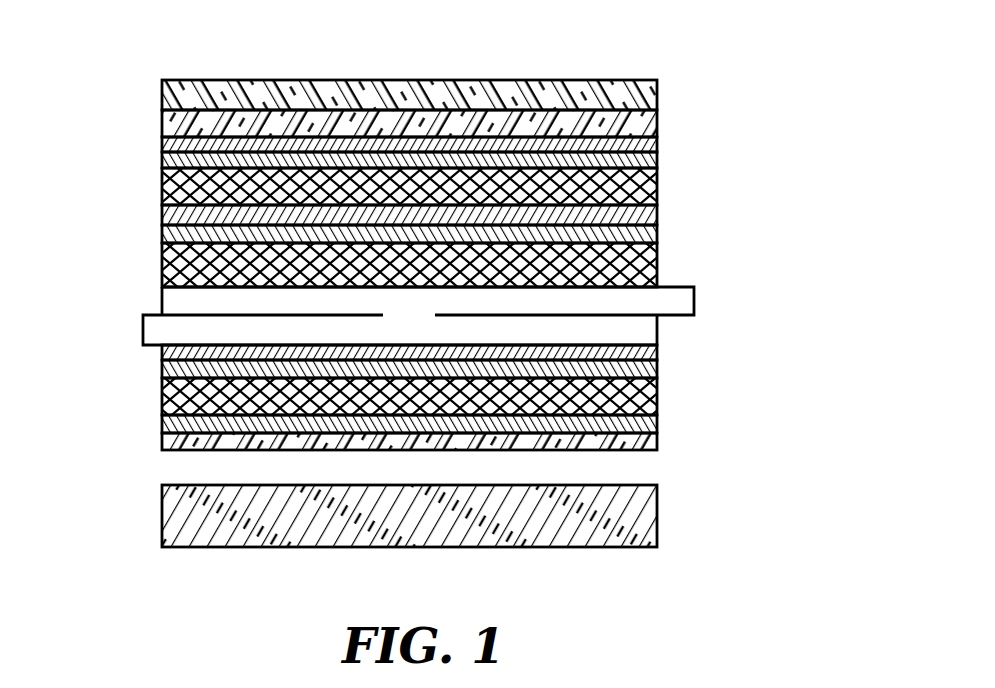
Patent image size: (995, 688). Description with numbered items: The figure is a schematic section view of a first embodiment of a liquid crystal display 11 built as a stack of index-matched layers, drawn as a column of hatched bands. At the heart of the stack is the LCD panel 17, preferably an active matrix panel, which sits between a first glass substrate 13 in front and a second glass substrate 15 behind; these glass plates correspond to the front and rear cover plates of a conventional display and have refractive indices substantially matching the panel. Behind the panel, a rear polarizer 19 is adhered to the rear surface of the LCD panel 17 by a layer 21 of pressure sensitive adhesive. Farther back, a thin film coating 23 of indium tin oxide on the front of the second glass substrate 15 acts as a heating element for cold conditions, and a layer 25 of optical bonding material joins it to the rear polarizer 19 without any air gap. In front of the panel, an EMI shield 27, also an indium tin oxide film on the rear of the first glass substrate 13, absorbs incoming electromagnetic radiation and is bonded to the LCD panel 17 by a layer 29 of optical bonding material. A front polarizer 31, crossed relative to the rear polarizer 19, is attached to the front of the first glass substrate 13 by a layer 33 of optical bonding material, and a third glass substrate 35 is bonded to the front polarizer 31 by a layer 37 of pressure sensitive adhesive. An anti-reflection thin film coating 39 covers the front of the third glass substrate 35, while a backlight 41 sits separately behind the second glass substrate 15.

The liquid crystal display 11 is at (573, 54).
The first glass substrate 13 is at (162, 218).
The second glass substrate 15 is at (658, 441).
The LCD panel 17 is at (423, 335).
The rear polarizer 19 is at (162, 370).
The layer of pressure sensitive adhesive 21 is at (658, 351).
The thin film coating 23 is at (162, 425).
The layer of optical bonding material 25 is at (658, 393).
The EMI shield 27 is at (658, 231).
The layer of optical bonding material 29 is at (162, 268).
The front polarizer 31 is at (162, 160).
The layer of optical bonding material 33 is at (658, 186).
The third glass substrate 35 is at (162, 125).
The layer of pressure sensitive adhesive 37 is at (658, 143).
The anti-reflection thin film coating 39 is at (658, 92).
The backlight 41 is at (658, 513).